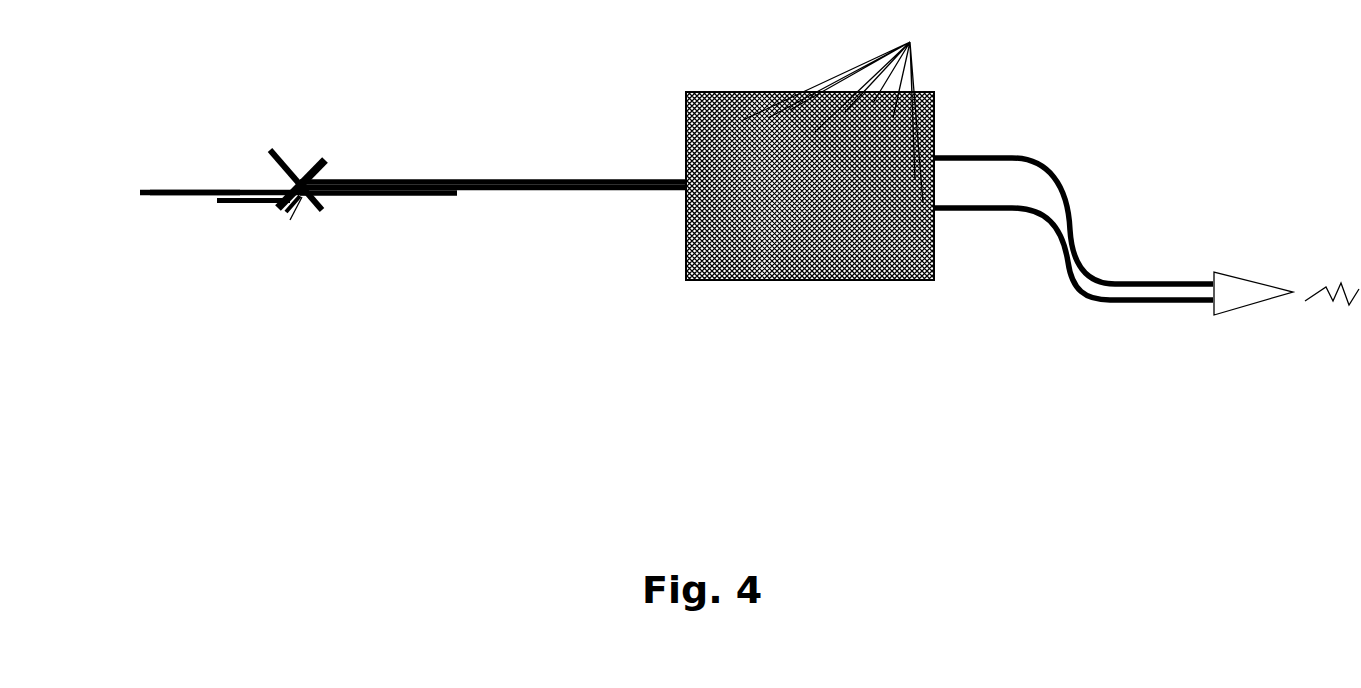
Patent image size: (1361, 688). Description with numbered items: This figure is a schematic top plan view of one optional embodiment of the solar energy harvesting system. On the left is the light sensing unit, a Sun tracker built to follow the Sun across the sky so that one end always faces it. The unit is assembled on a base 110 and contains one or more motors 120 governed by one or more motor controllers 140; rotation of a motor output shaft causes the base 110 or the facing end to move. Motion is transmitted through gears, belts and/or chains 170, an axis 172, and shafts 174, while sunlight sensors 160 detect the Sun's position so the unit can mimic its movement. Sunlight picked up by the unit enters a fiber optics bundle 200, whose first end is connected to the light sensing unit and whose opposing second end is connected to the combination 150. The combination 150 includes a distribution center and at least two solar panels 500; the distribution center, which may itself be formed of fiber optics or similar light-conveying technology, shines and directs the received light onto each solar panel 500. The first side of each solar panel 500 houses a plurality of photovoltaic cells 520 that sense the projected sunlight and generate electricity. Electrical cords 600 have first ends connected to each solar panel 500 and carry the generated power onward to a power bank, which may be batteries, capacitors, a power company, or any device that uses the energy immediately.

The base 110 is at (145, 188).
The motor controller 140 is at (187, 193).
The motor 120 is at (223, 203).
The gears, belts and/or chains 170 is at (263, 207).
The sunlight sensor 160 is at (273, 153).
The axis 172 is at (302, 197).
The shaft 174 is at (295, 207).
The fiber optics bundle 200 is at (553, 178).
The solar panel 500 is at (750, 97).
The combination 150 is at (685, 247).
The photovoltaic cells 520 is at (910, 42).
The electrical cord 600 is at (1052, 225).